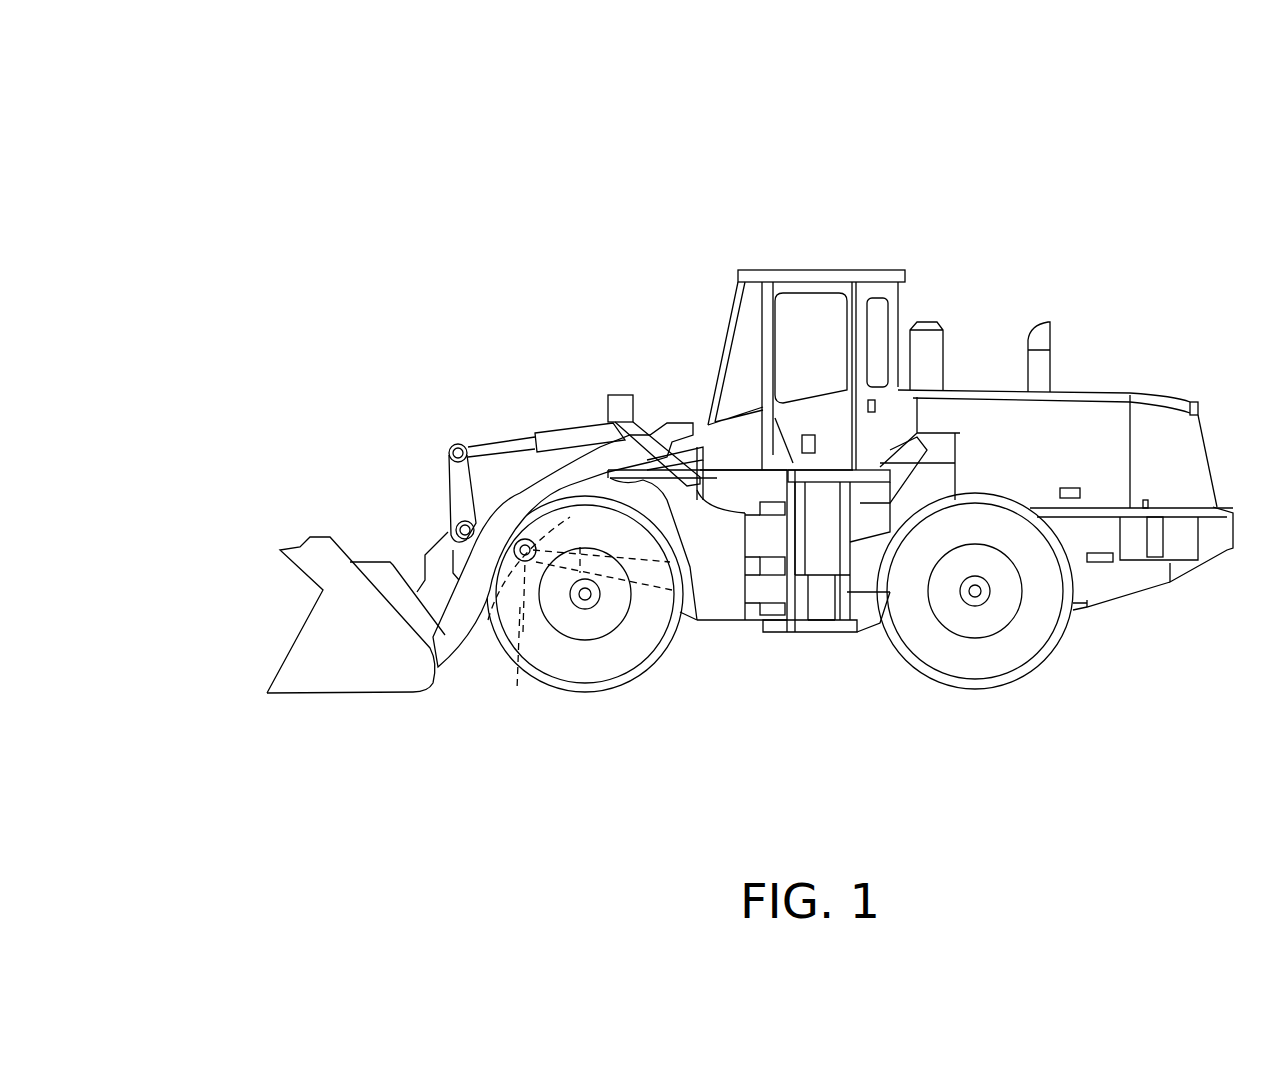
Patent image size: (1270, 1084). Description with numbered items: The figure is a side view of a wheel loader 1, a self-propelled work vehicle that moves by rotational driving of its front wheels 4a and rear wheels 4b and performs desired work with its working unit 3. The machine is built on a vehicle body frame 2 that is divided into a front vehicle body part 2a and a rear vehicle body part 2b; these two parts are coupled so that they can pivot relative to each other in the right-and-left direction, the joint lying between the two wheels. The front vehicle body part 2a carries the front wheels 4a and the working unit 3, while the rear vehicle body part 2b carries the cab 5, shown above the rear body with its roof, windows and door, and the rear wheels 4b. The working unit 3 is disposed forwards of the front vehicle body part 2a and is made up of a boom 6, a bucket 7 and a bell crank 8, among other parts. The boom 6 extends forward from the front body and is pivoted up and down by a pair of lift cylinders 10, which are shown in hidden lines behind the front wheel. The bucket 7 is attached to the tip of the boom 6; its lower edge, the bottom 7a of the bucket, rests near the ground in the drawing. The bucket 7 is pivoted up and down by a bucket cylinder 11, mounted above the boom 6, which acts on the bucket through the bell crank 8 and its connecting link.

The wheel loader 1 is at (1141, 160).
The vehicle body frame 2 is at (812, 642).
The front vehicle body part 2a is at (708, 608).
The rear vehicle body part 2b is at (866, 620).
The working unit 3 is at (245, 626).
The front wheels 4a is at (594, 673).
The rear wheels 4b is at (980, 672).
The cab 5 is at (841, 257).
The boom 6 is at (500, 523).
The bucket 7 is at (322, 550).
The bucket bottom 7a is at (342, 697).
The bell crank 8 is at (460, 497).
The lift cylinders 10 is at (520, 667).
The bucket cylinder 11 is at (548, 437).